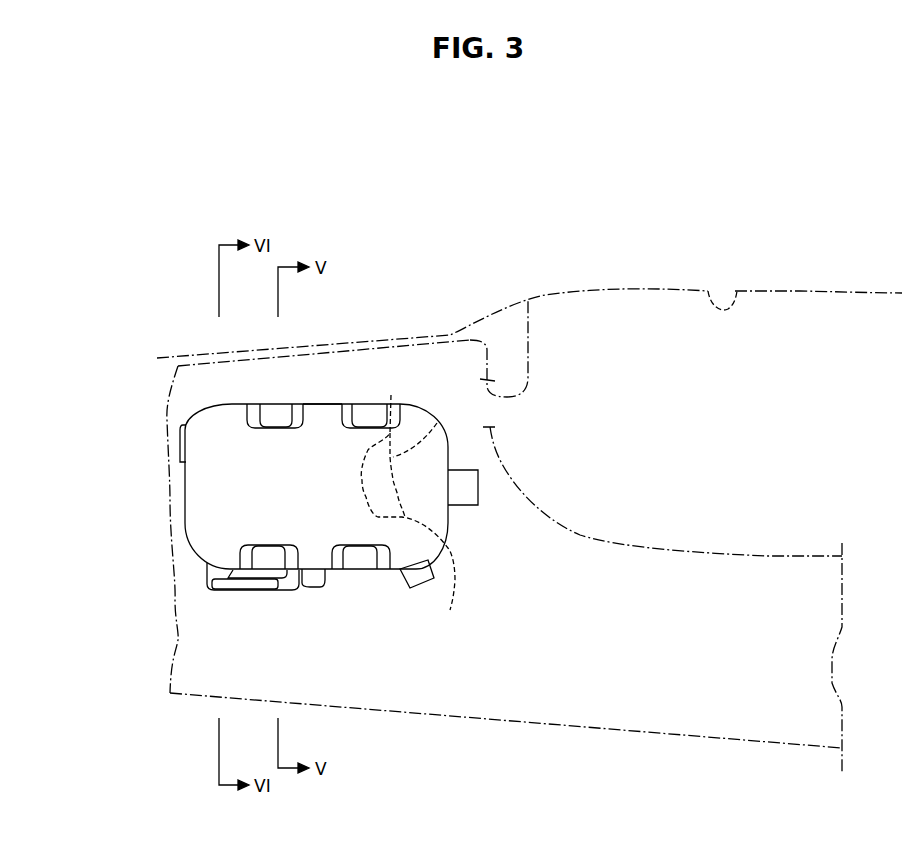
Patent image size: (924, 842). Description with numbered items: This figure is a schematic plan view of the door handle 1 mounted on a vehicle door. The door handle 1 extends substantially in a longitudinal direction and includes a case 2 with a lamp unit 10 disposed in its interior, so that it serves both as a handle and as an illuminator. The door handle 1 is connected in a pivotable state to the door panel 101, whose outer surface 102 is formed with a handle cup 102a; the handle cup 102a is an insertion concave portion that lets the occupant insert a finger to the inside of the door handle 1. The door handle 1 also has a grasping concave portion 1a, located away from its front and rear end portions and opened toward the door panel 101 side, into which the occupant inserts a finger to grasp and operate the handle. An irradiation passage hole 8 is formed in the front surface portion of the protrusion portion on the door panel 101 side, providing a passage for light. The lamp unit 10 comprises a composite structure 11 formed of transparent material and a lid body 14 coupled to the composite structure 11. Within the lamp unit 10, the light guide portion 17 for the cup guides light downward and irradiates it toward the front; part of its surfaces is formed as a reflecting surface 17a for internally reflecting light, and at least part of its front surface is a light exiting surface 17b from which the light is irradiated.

The door handle 1 is at (612, 733).
The grasping concave portion 1a is at (767, 556).
The case 2 is at (693, 738).
The irradiation passage hole 8 is at (528, 300).
The lamp unit 10 is at (420, 420).
The composite structure 11 is at (207, 590).
The lid body 14 is at (323, 410).
The light guide portion for the cup 17 is at (450, 610).
The reflecting surface 17a is at (368, 425).
The light exiting surface 17b is at (437, 423).
The door panel 101 is at (160, 360).
The outer surface 102 is at (167, 372).
The handle cup 102a is at (737, 290).